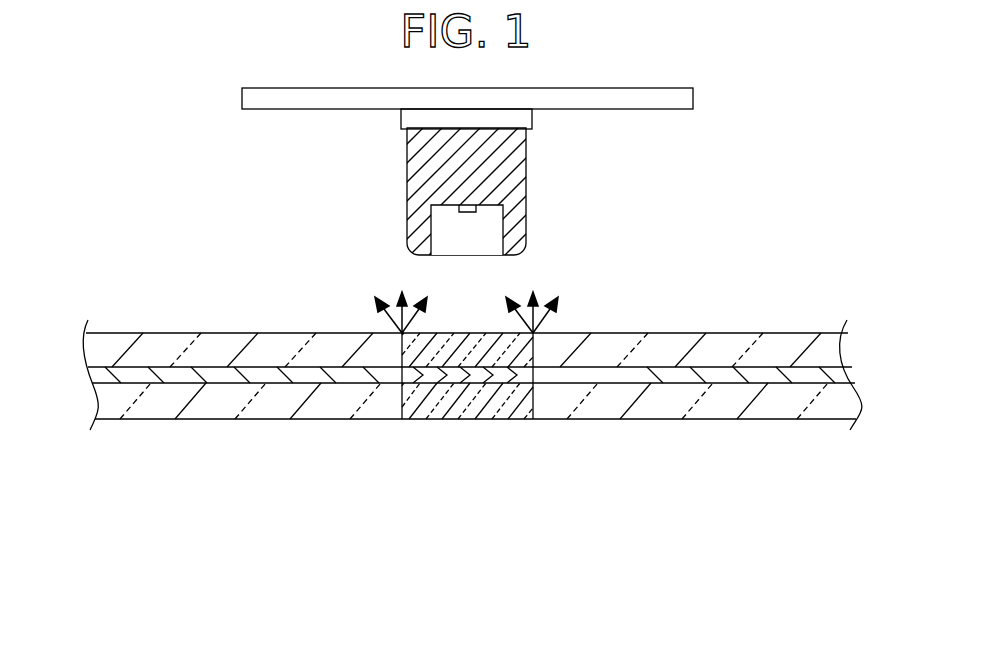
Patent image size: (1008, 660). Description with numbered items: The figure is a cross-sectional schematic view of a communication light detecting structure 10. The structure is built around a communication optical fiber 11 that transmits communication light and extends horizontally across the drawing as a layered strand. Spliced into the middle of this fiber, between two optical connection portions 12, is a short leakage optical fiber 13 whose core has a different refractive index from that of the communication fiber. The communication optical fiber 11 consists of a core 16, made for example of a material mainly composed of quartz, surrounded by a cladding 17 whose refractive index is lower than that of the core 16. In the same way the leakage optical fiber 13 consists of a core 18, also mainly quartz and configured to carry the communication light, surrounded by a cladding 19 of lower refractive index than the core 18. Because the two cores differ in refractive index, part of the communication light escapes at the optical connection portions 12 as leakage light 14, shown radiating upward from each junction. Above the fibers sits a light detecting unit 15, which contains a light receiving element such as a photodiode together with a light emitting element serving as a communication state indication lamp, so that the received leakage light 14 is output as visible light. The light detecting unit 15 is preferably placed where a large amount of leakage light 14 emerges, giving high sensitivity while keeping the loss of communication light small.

The communication light detecting structure 10 is at (211, 205).
The communication optical fiber 11 is at (472, 419).
The optical connection portions 12 is at (401, 420).
The leakage optical fiber 13 is at (467, 426).
The leakage light 14 is at (392, 322).
The light detecting unit 15 is at (527, 182).
The core 16 is at (188, 378).
The cladding 17 is at (165, 475).
The core 18 is at (435, 375).
The cladding 19 is at (412, 475).